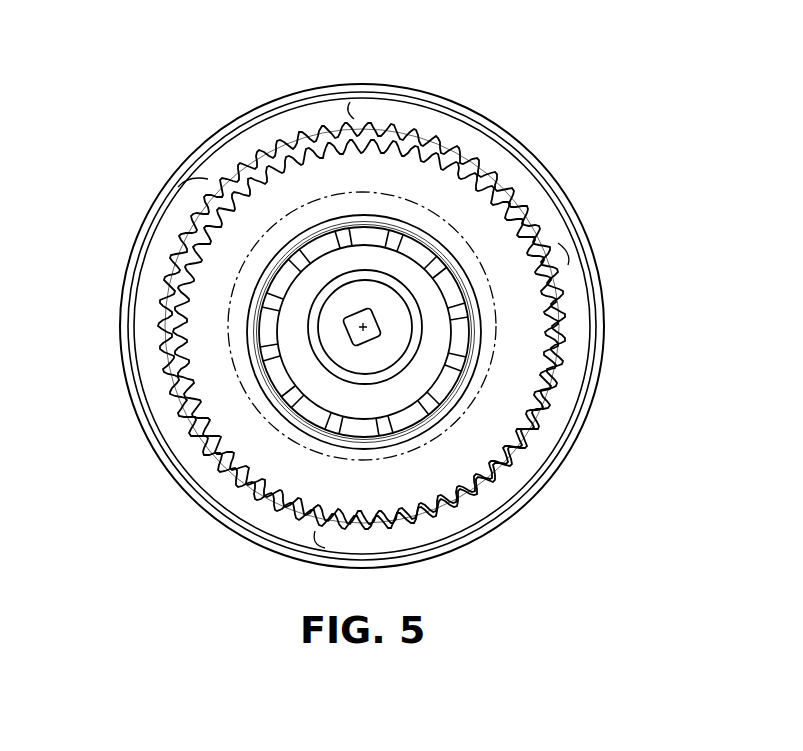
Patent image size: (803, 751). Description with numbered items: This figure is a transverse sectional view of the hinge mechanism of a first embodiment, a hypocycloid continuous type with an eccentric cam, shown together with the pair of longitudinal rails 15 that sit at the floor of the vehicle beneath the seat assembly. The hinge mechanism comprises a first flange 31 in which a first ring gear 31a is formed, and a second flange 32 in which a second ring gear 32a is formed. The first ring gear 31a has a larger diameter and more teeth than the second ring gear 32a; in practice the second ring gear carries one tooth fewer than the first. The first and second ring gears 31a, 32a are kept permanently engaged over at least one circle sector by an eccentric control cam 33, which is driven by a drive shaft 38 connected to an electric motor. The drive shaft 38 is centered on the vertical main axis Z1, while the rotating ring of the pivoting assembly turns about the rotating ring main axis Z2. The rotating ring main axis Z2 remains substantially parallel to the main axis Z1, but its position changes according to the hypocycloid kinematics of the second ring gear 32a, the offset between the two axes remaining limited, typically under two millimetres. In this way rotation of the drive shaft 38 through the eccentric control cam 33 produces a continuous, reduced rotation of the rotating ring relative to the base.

The longitudinal rails 15 is at (268, 352).
The first flange 31 is at (342, 104).
The first ring gear 31a is at (304, 140).
The second flange 32 is at (412, 190).
The second ring gear 32a is at (261, 162).
The eccentric control cam 33 is at (328, 392).
The drive shaft 38 is at (352, 334).
The main axis Z1 is at (362, 326).
The rotating ring main axis Z2 is at (352, 334).